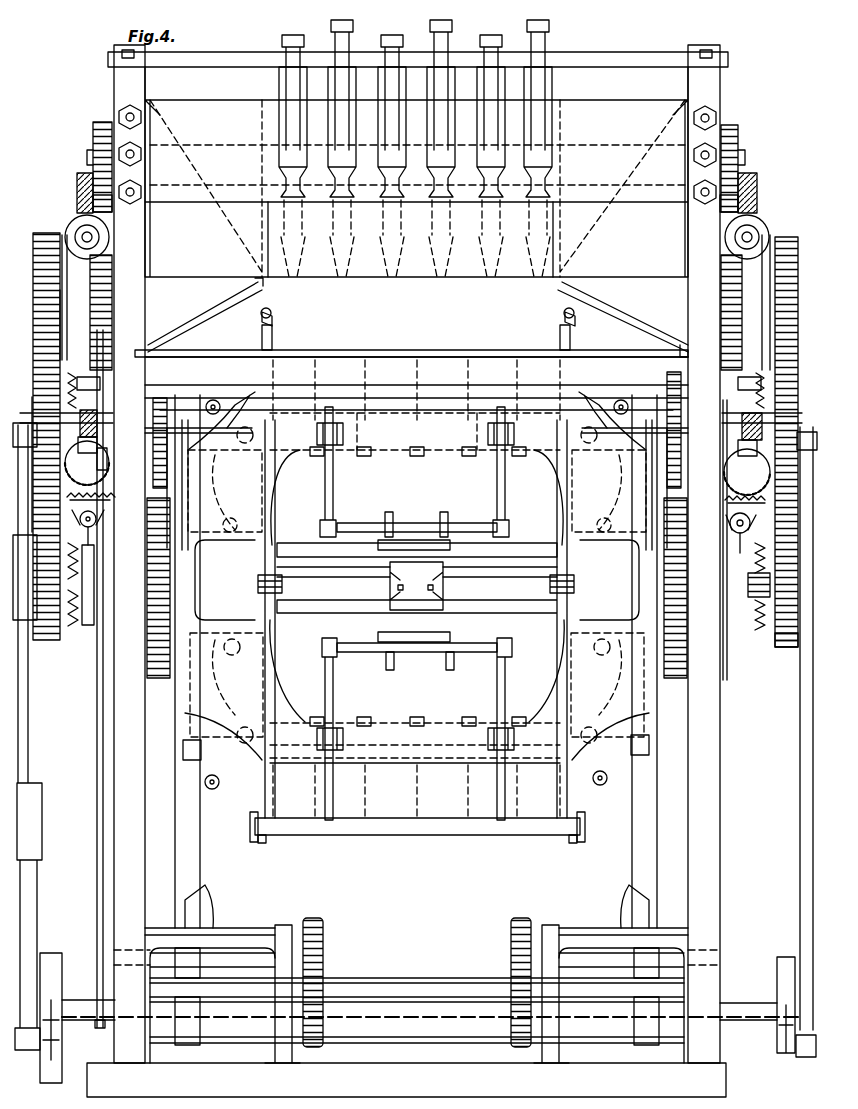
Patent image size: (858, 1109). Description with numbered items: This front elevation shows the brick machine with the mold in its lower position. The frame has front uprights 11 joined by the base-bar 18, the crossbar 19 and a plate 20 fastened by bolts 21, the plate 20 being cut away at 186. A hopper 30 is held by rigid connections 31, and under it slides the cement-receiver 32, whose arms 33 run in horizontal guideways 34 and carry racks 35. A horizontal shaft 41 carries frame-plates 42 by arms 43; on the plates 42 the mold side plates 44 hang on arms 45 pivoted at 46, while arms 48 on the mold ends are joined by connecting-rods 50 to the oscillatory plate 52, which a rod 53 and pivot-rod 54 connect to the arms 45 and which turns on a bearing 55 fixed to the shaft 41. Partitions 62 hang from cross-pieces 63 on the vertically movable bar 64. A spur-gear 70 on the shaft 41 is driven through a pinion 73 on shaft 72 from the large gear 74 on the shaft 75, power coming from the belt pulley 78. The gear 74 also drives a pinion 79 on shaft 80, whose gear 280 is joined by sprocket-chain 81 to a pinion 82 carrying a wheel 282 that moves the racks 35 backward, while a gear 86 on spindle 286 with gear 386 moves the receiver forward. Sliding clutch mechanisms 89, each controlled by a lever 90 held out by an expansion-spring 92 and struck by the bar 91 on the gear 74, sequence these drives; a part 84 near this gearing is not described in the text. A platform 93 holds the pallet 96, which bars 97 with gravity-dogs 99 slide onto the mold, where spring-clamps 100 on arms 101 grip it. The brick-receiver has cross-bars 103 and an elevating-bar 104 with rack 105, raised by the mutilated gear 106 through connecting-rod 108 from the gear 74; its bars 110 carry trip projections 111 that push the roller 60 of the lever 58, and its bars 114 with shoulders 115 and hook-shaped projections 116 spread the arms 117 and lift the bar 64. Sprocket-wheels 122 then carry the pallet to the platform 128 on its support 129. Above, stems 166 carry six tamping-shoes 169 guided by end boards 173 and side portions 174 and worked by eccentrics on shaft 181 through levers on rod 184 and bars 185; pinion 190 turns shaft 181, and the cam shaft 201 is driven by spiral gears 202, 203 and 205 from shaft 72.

The upright 11 is at (418, 661).
The base-bar 18 is at (406, 1080).
The crossbar 19 is at (416, 386).
The plate 20 is at (417, 188).
The bolts 21 is at (718, 118).
The hopper 30 is at (416, 172).
The rigid connections 31 is at (114, 95).
The cement-receiver 32 is at (417, 310).
The arms 33 is at (200, 308).
The horizontal guideways 34 is at (675, 340).
The rack 35 is at (638, 360).
The horizontal shaft 41 is at (417, 579).
The frame-plates 42 is at (417, 593).
The arms 43 is at (277, 607).
The mold side plate 44 is at (415, 597).
The arms 45 is at (326, 487).
The pivot 46 is at (314, 437).
The arms 48 is at (593, 515).
The connecting-rods 50 is at (289, 553).
The oscillatory plate 52 is at (396, 540).
The rod 53 is at (392, 508).
The pivot-rod 54 is at (344, 524).
The bearing 55 is at (388, 582).
The lever 58 is at (628, 690).
The roller 60 is at (409, 589).
The partitions 62 is at (410, 376).
The cross-pieces 63 is at (413, 718).
The bar 64 is at (235, 395).
The spur-gear 70 is at (146, 568).
The shaft 72 is at (140, 547).
The pinion 73 is at (415, 585).
The large gear 74 is at (794, 354).
The shaft 75 is at (102, 418).
The pulley 78 is at (23, 577).
The pinion 79 is at (48, 643).
The shaft 80 is at (429, 648).
The sprocket-chain 81 is at (417, 580).
The pinion 82 is at (693, 454).
The lever 84 is at (734, 650).
The gear 86 is at (665, 395).
The sliding clutch mechanisms 89 is at (416, 516).
The lever 90 is at (423, 531).
The bar 91 is at (68, 316).
The expansion-spring 92 is at (96, 498).
The platform 93 is at (245, 350).
The pallet 96 is at (470, 350).
The bars 97 is at (418, 317).
The gravity-dogs 99 is at (272, 333).
The spring-clamps 100 is at (268, 845).
The arms 101 is at (250, 822).
The cross-bars 103 is at (417, 995).
The elevating-bar 104 is at (432, 1010).
The rack 105 is at (777, 1015).
The mutilated gear 106 is at (50, 950).
The connecting-rod 108 is at (33, 768).
The bar 110 is at (205, 972).
The curved projection 111 is at (216, 890).
The bars 114 is at (190, 860).
The shoulders 115 is at (183, 758).
The hook-shaped projections 116 is at (417, 729).
The arms 117 is at (182, 695).
The sprocket-wheels 122 is at (326, 940).
The platform 128 is at (284, 922).
The support 129 is at (538, 957).
The vertical stems 166 is at (546, 160).
The tamping-shoe 169 is at (389, 260).
The vertical end boards 173 is at (262, 252).
The side portions 174 is at (272, 237).
The shaft 181 is at (88, 153).
The rod 184 is at (590, 62).
The bars 185 is at (333, 80).
The cut-out portions 186 is at (282, 102).
The pinion 190 is at (92, 134).
The shaft 201 is at (106, 198).
The spiral gear 202 is at (78, 178).
The spiral gear 203 is at (70, 221).
The spiral gear 205 is at (417, 466).
The gear 280 is at (414, 613).
The wheel 282 is at (117, 457).
The spindle 286 is at (100, 378).
The gear 386 is at (34, 398).